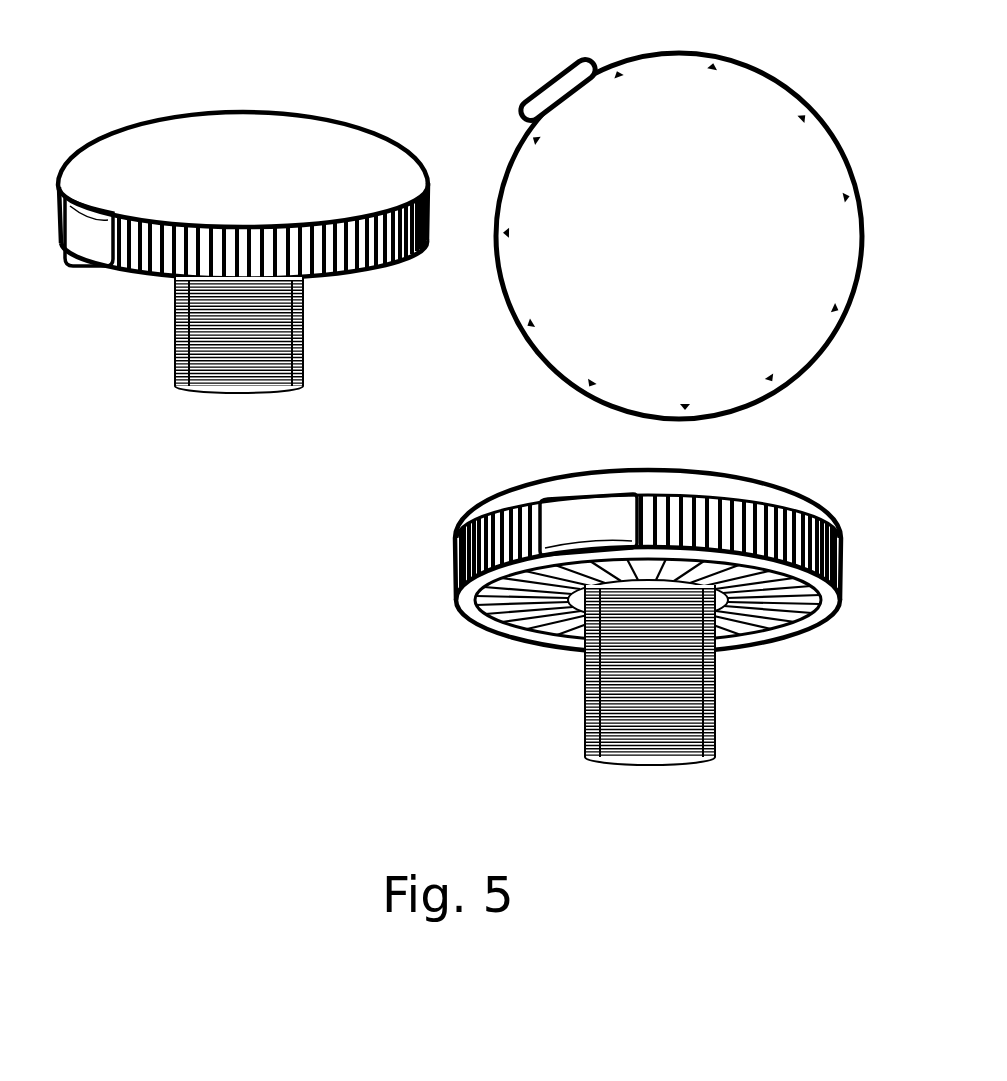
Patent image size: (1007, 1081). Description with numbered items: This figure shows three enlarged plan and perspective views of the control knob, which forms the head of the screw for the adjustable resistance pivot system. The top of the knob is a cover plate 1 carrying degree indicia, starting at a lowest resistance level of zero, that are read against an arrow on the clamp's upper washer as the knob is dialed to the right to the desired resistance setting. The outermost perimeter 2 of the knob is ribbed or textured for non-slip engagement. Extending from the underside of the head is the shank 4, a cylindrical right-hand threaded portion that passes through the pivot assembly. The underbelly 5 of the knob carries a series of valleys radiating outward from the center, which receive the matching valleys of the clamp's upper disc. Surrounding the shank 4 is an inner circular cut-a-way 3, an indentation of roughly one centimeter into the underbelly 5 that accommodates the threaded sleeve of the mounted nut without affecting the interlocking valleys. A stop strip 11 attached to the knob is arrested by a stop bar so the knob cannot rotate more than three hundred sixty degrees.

The cover plate 1 is at (538, 198).
The outermost perimeter 2 is at (447, 572).
The inner circular cut-a-way 3 is at (550, 635).
The shank 4 is at (303, 343).
The underbelly 5 is at (763, 615).
The stop strip 11 is at (545, 80).